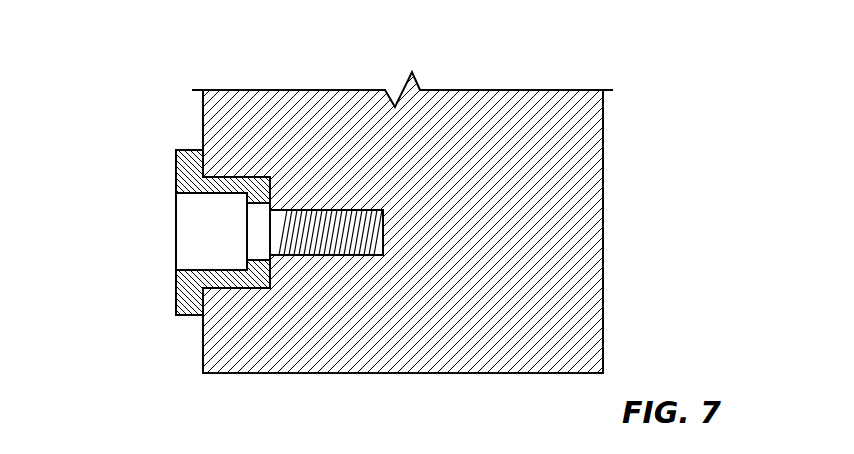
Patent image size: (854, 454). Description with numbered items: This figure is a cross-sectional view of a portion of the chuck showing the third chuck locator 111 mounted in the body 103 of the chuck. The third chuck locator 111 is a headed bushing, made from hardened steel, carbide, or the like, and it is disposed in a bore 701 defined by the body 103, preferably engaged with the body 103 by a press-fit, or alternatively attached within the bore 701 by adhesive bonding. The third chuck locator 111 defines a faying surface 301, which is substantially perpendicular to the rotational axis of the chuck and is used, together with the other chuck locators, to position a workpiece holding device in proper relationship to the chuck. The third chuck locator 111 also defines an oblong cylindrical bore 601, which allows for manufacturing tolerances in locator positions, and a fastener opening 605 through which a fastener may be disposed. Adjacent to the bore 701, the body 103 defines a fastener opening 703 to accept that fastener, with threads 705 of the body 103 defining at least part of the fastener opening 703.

The body 103 is at (595, 132).
The third chuck locator 111 is at (171, 140).
The faying surface 301 is at (176, 300).
The oblong cylindrical bore 601 is at (195, 194).
The fastener opening 605 is at (250, 257).
The bore 701 is at (222, 289).
The fastener opening 703 is at (300, 255).
The threads 705 is at (357, 243).